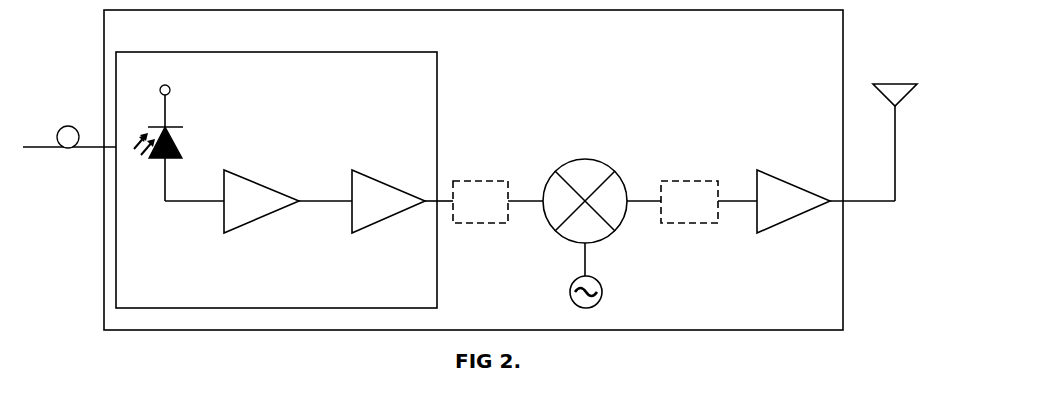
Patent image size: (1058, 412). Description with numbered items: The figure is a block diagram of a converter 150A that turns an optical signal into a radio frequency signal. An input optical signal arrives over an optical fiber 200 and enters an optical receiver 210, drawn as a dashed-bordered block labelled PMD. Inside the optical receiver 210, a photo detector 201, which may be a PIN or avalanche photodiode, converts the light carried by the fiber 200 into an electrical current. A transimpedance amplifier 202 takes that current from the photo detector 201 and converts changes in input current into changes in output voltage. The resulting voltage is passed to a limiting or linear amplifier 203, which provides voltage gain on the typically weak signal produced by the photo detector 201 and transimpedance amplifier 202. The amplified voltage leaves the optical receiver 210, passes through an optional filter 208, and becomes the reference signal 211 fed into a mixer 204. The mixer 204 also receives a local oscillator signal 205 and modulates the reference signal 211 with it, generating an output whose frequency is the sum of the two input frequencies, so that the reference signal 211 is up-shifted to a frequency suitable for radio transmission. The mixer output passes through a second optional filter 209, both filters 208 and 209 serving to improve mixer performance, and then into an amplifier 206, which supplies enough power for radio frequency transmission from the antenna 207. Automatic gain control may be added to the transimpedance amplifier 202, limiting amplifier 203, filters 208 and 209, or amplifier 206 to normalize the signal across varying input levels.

The converter 150A is at (473, 170).
The optical fiber 200 is at (69, 137).
The photo detector 201 is at (179, 143).
The transimpedance amplifier 202 is at (261, 213).
The limiting or linear amplifier 203 is at (388, 189).
The mixer 204 is at (585, 189).
The local oscillator signal 205 is at (586, 275).
The amplifier 206 is at (793, 196).
The antenna 207 is at (897, 110).
The filter 208 is at (480, 218).
The filter 209 is at (689, 219).
The optical receiver 210 is at (276, 170).
The reference signal 211 is at (525, 213).